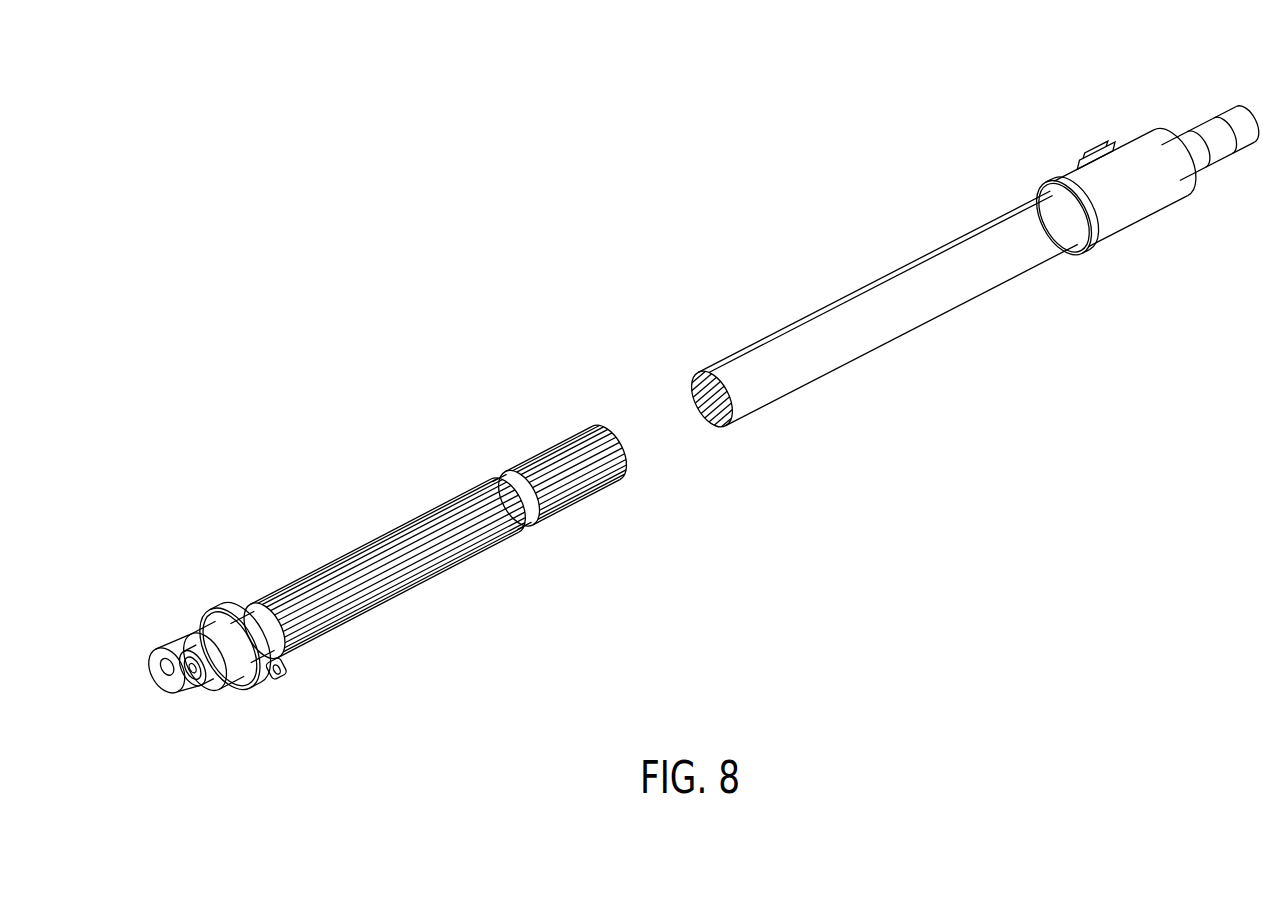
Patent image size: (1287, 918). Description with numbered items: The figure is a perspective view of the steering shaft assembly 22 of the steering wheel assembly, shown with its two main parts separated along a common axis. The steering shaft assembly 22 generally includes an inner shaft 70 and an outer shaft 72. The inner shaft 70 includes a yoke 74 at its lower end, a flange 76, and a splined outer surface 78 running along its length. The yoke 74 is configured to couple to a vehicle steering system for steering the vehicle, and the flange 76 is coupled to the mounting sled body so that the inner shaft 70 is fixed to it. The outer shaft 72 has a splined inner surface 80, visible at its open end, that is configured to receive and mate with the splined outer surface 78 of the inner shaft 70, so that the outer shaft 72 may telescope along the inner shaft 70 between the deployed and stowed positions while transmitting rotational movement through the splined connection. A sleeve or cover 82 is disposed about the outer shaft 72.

The steering shaft assembly 22 is at (497, 152).
The inner shaft 70 is at (350, 514).
The outer shaft 72 is at (846, 240).
The yoke 74 is at (223, 670).
The flange 76 is at (277, 680).
The splined outer surface 78 is at (450, 553).
The splined inner surface 80 is at (692, 400).
The sleeve or cover 82 is at (1122, 222).